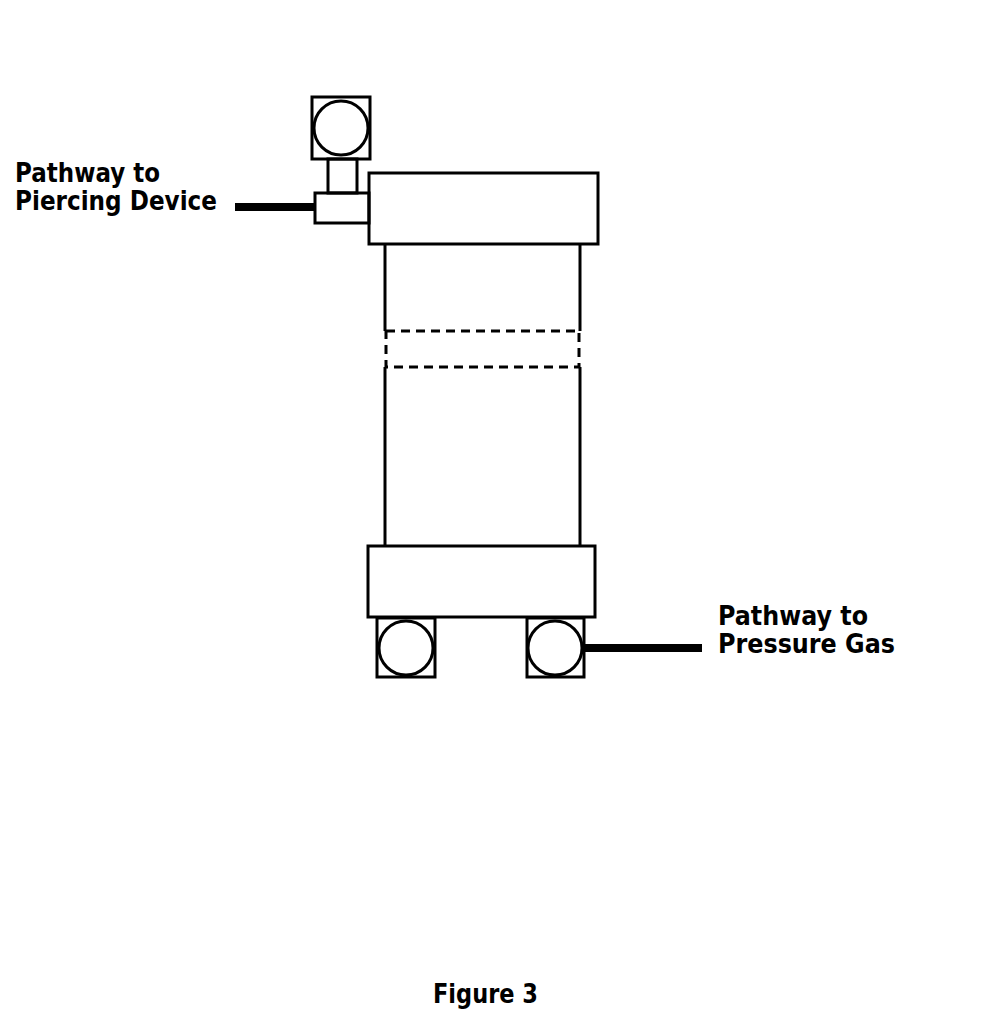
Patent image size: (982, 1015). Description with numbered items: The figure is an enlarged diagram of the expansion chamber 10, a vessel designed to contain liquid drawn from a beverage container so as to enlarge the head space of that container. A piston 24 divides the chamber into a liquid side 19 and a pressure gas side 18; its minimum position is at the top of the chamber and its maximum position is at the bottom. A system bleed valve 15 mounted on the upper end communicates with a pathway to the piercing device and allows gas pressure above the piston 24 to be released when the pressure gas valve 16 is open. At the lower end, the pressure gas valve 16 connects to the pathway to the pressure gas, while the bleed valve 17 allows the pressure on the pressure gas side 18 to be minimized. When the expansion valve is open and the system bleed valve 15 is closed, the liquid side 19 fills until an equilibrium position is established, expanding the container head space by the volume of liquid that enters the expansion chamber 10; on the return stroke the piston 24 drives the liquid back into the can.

The expansion chamber 10 is at (483, 395).
The system bleed valve 15 is at (347, 111).
The pressure gas valve 16 is at (582, 693).
The bleed valve 17 is at (412, 693).
The pressure gas side 18 is at (482, 456).
The liquid side 19 is at (482, 287).
The piston 24 is at (482, 349).